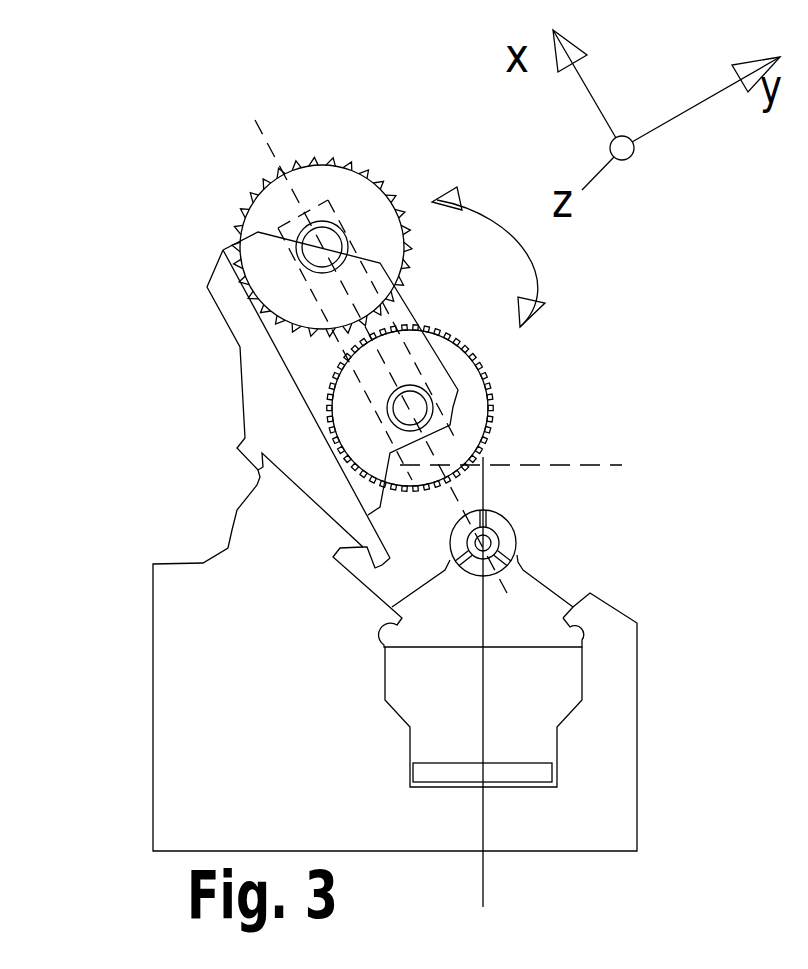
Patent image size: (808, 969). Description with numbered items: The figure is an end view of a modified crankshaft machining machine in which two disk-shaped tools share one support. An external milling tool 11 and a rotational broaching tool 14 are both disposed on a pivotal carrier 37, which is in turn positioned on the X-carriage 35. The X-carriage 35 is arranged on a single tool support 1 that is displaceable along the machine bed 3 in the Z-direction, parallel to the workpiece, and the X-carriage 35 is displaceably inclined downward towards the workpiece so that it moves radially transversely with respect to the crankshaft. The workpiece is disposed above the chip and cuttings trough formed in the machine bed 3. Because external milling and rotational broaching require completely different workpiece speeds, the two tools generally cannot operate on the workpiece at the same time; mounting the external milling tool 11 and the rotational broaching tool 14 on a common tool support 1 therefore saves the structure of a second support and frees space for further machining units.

The tool support 1 is at (298, 409).
The machine bed 3 is at (395, 682).
The external milling tool 11 is at (493, 404).
The rotational broaching tool 14 is at (317, 164).
The X-carriage 35 is at (340, 379).
The pivotal carrier 37 is at (387, 312).